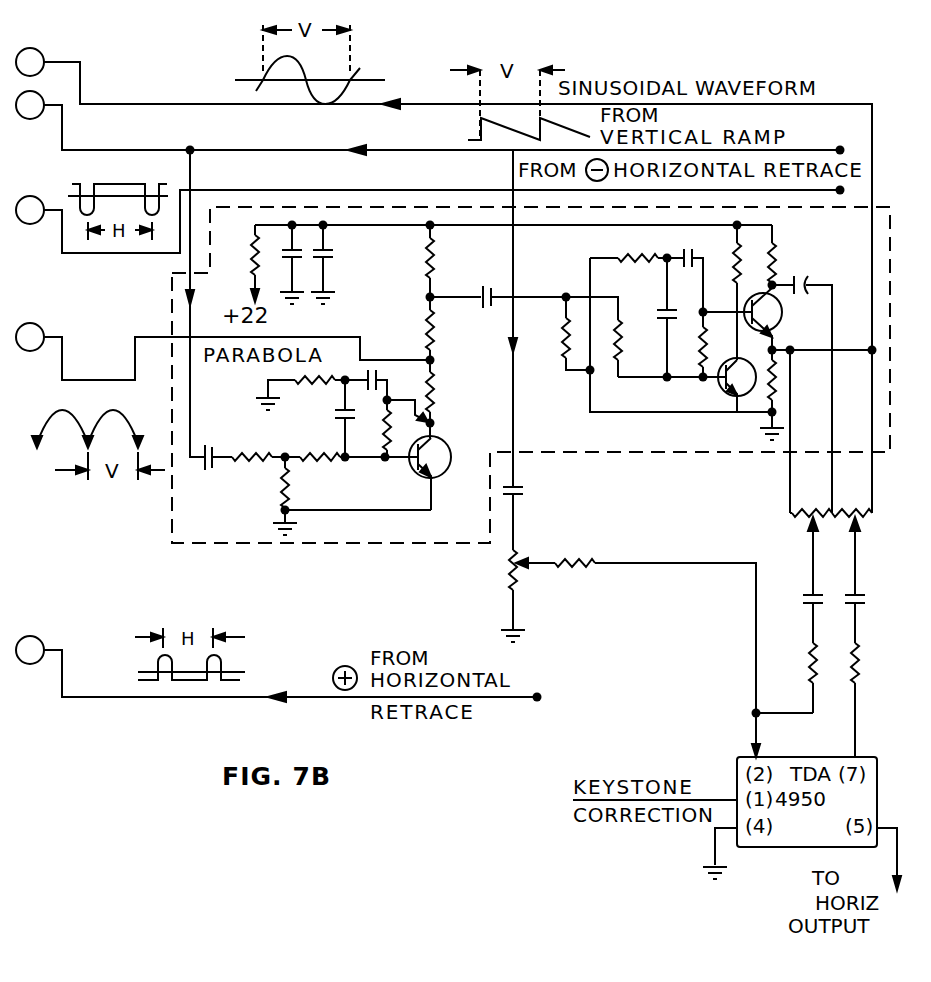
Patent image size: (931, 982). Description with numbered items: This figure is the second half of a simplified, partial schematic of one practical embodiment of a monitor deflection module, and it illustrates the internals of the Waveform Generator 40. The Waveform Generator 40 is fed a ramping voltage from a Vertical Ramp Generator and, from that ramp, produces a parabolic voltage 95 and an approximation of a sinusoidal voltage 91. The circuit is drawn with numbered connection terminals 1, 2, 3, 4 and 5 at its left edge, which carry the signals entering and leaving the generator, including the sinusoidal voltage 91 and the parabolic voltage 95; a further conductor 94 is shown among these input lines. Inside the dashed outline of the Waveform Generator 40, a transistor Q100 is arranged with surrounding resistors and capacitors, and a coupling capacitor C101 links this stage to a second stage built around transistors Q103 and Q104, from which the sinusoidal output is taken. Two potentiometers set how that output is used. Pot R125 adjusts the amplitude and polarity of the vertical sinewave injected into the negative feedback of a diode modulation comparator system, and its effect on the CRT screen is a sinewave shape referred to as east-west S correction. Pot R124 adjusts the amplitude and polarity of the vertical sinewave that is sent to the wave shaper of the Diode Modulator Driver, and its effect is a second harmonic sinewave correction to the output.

The terminal 1 (sinusoidal waveform input) 1 is at (30, 62).
The terminal 2 (vertical ramp input) 2 is at (30, 105).
The terminal 3 (negative horizontal retrace input) 3 is at (30, 210).
The terminal 4 (parabola output) 4 is at (30, 337).
The terminal 5 (positive horizontal retrace input) 5 is at (30, 650).
The sinusoidal voltage 91 is at (135, 106).
The vertical ramp line 94 is at (130, 154).
The parabolic voltage 95 is at (327, 347).
The Waveform Generator 40 is at (235, 545).
The coupling capacitor C101 is at (498, 282).
The transistor Q100 is at (437, 473).
The transistor Q103 is at (712, 385).
The transistor Q104 is at (788, 319).
The pot R124 is at (813, 508).
The pot R125 is at (852, 508).